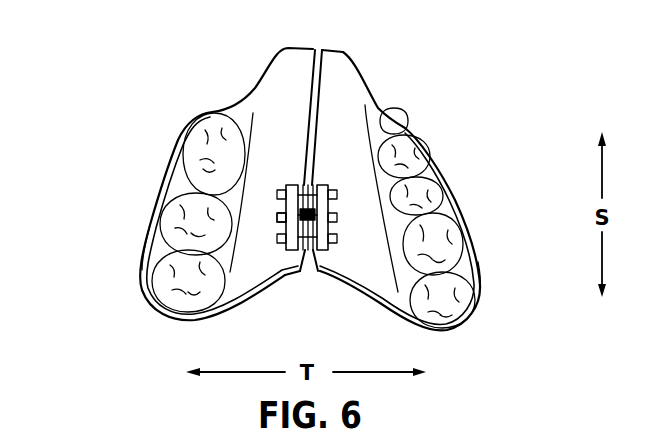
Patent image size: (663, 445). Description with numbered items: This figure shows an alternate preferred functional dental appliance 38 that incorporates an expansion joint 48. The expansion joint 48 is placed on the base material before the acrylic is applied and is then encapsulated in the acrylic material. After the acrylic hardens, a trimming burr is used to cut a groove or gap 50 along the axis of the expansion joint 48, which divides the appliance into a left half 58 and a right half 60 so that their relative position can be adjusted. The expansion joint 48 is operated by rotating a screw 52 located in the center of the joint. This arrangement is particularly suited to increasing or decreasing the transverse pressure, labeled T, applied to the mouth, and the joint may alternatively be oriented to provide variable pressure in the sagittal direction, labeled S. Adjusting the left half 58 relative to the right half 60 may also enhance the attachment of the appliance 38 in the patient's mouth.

The dental appliance 38 is at (453, 185).
The expansion joint 48 is at (297, 178).
The groove or gap 50 is at (320, 48).
The screw 52 is at (278, 214).
The left half 58 is at (147, 244).
The right half 60 is at (481, 283).